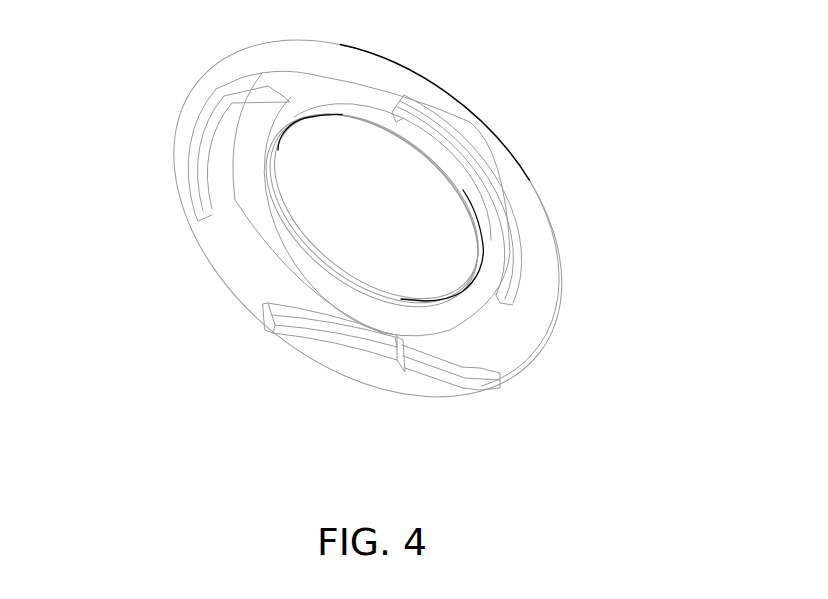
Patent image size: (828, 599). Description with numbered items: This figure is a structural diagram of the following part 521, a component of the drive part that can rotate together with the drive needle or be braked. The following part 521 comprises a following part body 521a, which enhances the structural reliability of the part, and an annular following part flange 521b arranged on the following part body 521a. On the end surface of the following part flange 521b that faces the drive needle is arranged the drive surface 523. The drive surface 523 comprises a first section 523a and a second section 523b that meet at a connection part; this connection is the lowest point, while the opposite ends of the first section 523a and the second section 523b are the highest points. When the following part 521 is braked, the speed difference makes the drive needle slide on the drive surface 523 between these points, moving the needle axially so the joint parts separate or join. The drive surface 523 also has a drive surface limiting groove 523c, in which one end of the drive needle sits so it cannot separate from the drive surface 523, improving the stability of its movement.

The following part 521 is at (477, 60).
The following part body 521a is at (497, 232).
The following part flange 521b is at (527, 327).
The drive surface 523 is at (197, 110).
The first section 523a is at (315, 347).
The second section 523b is at (437, 378).
The drive surface limiting groove 523c is at (463, 380).